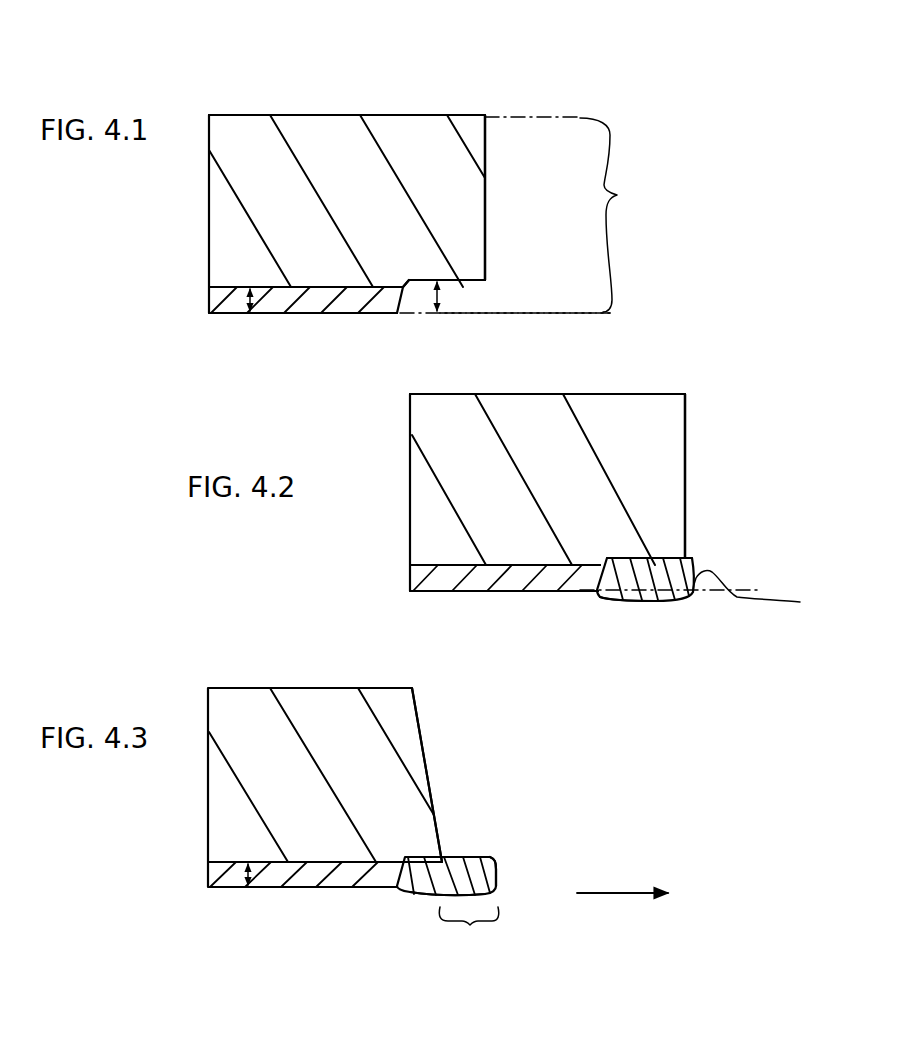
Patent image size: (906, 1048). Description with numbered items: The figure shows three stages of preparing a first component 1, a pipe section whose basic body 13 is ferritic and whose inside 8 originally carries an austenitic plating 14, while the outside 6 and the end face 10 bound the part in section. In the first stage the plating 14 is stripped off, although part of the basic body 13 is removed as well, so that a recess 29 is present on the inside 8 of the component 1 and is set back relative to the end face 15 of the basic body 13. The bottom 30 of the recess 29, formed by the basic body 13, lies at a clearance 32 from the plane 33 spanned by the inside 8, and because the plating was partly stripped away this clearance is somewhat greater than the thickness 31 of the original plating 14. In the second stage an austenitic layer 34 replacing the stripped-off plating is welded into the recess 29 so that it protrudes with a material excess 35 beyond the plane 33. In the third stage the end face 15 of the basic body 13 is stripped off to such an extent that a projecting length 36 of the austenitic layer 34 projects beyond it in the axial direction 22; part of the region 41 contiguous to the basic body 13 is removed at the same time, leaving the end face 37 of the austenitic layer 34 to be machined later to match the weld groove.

In FIG. 4.1, the first component 1 is at (333, 160).
In FIG. 4.2, the first component 1 is at (635, 438).
In FIG. 4.1, the outside 6 is at (262, 115).
In FIG. 4.2, the outside 6 is at (647, 393).
In FIG. 4.1, the inside 8 is at (350, 317).
In FIG. 4.2, the inside 8 is at (523, 593).
In FIG. 4.1, the end face 10 is at (625, 195).
In FIG. 4.1, the basic body 13 is at (413, 158).
In FIG. 4.2, the basic body 13 is at (488, 495).
In FIG. 4.3, the basic body 13 is at (315, 723).
In FIG. 4.1, the plating 14 is at (318, 313).
In FIG. 4.2, the plating 14 is at (477, 578).
In FIG. 4.3, the plating 14 is at (320, 887).
In FIG. 4.1, the end face 15 is at (485, 210).
In FIG. 4.2, the end face 15 is at (685, 453).
In FIG. 4.3, the end face 15 is at (427, 760).
In FIG. 4.3, the axial direction 22 is at (620, 895).
In FIG. 4.1, the recess 29 is at (456, 303).
In FIG. 4.1, the bottom 30 is at (470, 294).
In FIG. 4.1, the thickness 31 is at (262, 302).
In FIG. 4.3, the thickness 31 is at (237, 889).
In FIG. 4.1, the clearance 32 is at (410, 317).
In FIG. 4.1, the plane 33 is at (523, 312).
In FIG. 4.2, the plane 33 is at (753, 589).
In FIG. 4.2, the austenitic layer 34 is at (678, 597).
In FIG. 4.3, the austenitic layer 34 is at (413, 893).
In FIG. 4.2, the material excess 35 is at (635, 601).
In FIG. 4.3, the material excess 35 is at (428, 896).
In FIG. 4.3, the projecting length 36 is at (470, 932).
In FIG. 4.2, the end face 37 is at (765, 598).
In FIG. 4.3, the end face 37 is at (497, 878).
In FIG. 4.2, the region 41 is at (649, 557).